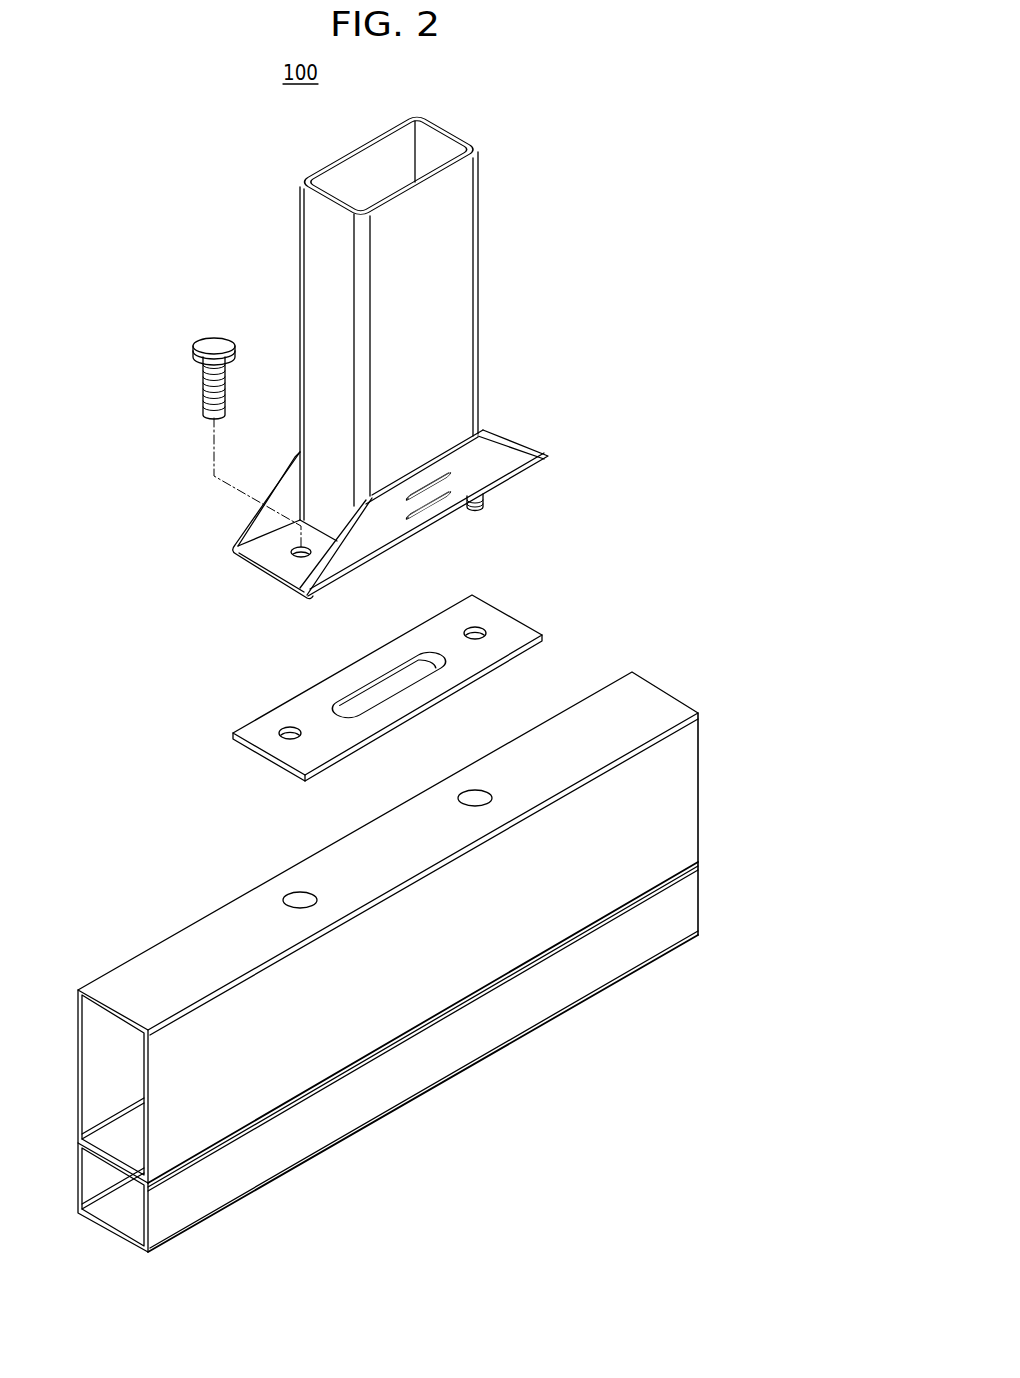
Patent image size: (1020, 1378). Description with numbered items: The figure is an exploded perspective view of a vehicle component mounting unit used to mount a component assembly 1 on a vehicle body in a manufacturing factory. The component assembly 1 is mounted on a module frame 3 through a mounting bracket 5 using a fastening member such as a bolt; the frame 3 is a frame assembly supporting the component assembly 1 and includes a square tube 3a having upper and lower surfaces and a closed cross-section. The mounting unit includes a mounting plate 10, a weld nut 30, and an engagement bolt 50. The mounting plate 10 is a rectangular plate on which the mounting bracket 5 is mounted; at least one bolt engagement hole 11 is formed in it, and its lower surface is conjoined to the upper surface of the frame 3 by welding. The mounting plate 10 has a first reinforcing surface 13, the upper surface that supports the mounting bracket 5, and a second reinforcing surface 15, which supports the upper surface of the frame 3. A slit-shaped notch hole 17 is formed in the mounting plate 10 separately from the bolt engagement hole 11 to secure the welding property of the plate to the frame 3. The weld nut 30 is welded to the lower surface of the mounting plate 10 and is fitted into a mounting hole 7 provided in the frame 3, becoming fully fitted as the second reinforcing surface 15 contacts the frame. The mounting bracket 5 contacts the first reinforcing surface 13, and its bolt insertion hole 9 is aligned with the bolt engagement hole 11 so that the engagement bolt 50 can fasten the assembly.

The component assembly 1 is at (510, 311).
The module frame 3 is at (427, 962).
The square tube 3a is at (672, 841).
The mounting bracket 5 is at (293, 570).
The mounting hole 7 is at (288, 893).
The bolt insertion hole 9 is at (288, 557).
The mounting plate 10 is at (395, 682).
The bolt engagement hole 11 is at (280, 715).
The first reinforcing surface 13 is at (447, 629).
The second reinforcing surface 15 is at (334, 770).
The notch hole 17 is at (376, 677).
The weld nut 30 is at (289, 736).
The engagement bolt 50 is at (209, 342).